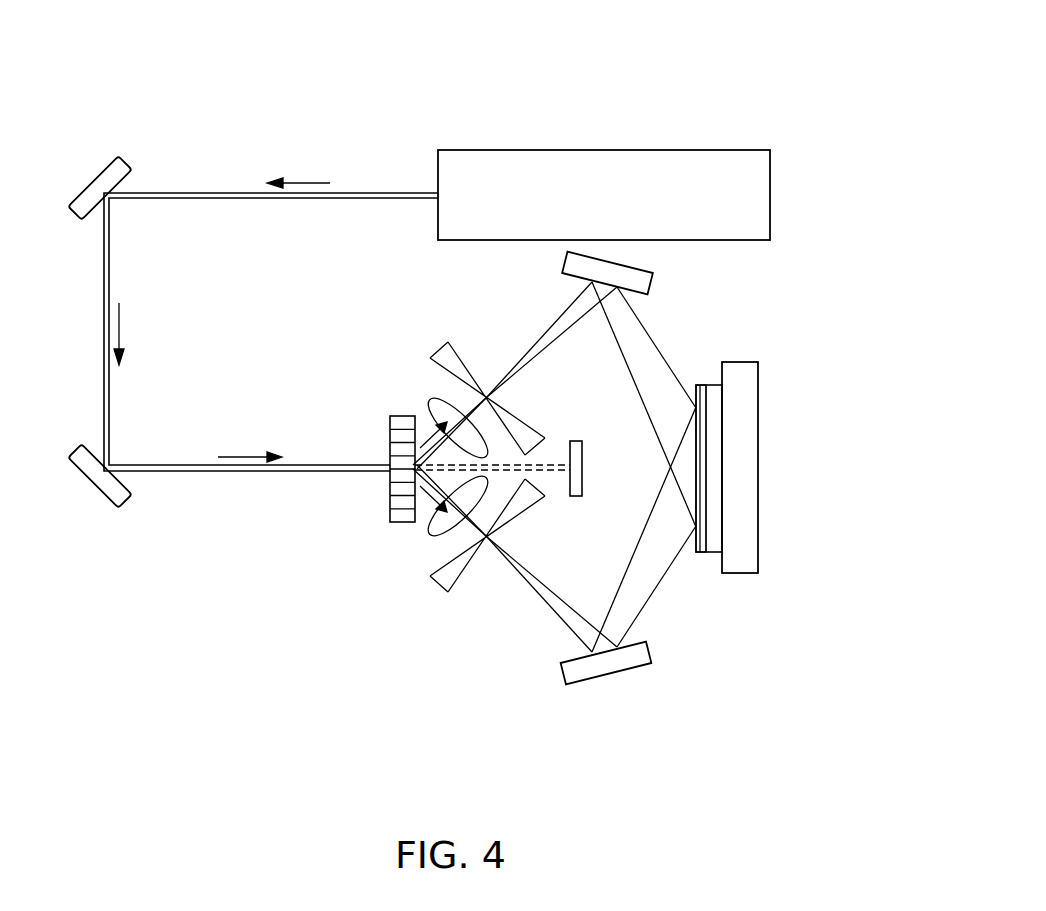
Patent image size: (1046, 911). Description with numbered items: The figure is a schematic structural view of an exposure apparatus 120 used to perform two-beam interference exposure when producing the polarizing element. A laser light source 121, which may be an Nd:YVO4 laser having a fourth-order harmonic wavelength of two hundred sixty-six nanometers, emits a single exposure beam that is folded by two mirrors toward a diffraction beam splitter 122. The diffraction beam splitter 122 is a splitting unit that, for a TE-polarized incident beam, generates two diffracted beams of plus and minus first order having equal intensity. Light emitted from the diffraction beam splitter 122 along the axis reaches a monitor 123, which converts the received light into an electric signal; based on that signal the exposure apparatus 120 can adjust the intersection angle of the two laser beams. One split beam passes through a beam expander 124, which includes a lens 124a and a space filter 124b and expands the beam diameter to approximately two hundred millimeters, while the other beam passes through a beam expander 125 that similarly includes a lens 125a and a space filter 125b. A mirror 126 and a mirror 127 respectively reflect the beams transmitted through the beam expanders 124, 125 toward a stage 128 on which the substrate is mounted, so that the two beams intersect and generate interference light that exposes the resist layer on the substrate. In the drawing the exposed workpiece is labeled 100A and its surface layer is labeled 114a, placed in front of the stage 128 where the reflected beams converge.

The exposure apparatus 120 is at (656, 110).
The laser light source 121 is at (727, 163).
The diffraction beam splitter 122 is at (397, 446).
The monitor 123 is at (575, 440).
The beam expander 124 is at (337, 331).
The lens 124a is at (437, 403).
The space filter 124b is at (442, 352).
The beam expander 125 is at (337, 535).
The lens 125a is at (435, 530).
The space filter 125b is at (442, 587).
The mirror 126 is at (648, 275).
The mirror 127 is at (647, 653).
The stage 128 is at (745, 447).
The substrate 100A is at (710, 555).
The layer to be processed 114a is at (700, 385).